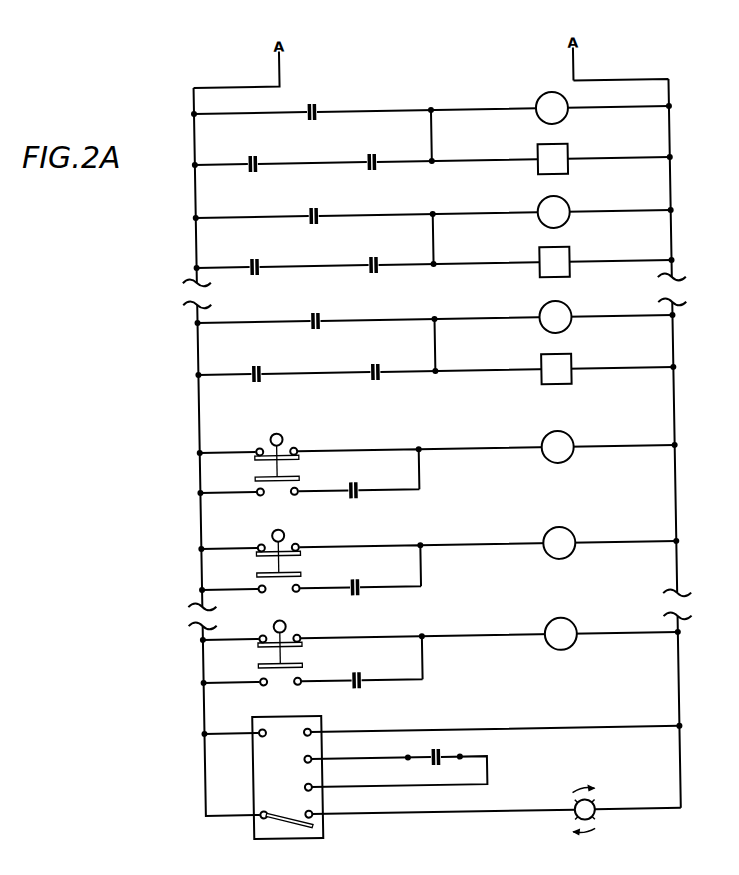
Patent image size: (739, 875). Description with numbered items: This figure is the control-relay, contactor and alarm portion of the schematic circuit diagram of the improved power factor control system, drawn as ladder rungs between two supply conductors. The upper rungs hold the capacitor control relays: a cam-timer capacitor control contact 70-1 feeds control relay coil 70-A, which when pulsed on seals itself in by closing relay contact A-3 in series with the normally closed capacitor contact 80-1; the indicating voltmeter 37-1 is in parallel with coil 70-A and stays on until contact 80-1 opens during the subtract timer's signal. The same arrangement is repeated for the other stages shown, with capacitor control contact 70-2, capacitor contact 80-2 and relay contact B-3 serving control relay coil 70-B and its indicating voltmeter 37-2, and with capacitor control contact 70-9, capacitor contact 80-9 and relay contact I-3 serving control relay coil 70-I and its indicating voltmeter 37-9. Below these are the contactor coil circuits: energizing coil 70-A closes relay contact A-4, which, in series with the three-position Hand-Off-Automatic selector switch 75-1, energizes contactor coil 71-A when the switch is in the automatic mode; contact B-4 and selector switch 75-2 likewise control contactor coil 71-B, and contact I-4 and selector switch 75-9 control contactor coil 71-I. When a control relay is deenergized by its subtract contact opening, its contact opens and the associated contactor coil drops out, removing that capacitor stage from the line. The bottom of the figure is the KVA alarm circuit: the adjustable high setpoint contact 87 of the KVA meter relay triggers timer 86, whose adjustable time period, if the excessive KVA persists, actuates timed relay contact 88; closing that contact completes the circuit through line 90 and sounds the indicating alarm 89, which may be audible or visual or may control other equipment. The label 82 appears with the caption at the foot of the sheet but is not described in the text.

The capacitor control contact 70-1 is at (320, 105).
The capacitor contact 80-1 is at (261, 163).
The relay contact A-3 is at (372, 159).
The capacitor control contact 70-2 is at (318, 214).
The capacitor contact 80-2 is at (260, 266).
The relay contact B-3 is at (370, 263).
The capacitor control contact 70-9 is at (319, 317).
The capacitor contact 80-9 is at (259, 373).
The relay contact I-3 is at (373, 366).
The control relay coil 70-A is at (557, 108).
The indicating voltmeter 37-1 is at (559, 154).
The control relay coil 70-B is at (558, 209).
The indicating voltmeter 37-2 is at (561, 263).
The control relay coil 70-I is at (564, 317).
The indicating voltmeter 37-9 is at (563, 366).
The contactor coil 71-A is at (561, 448).
The contactor coil 71-B is at (561, 539).
The contactor coil 71-I is at (561, 633).
The selector switch 75-1 is at (239, 444).
The selector switch 75-2 is at (242, 564).
The selector switch 75-9 is at (249, 656).
The relay contact A-4 is at (349, 491).
The relay contact B-4 is at (350, 585).
The relay contact I-4 is at (350, 680).
The timer 86 is at (252, 773).
The high setpoint contact 87 is at (432, 757).
The timed relay contact 88 is at (285, 829).
The indicating alarm 89 is at (585, 815).
The line 90 is at (426, 819).
The rail timer development 82 is at (525, 868).